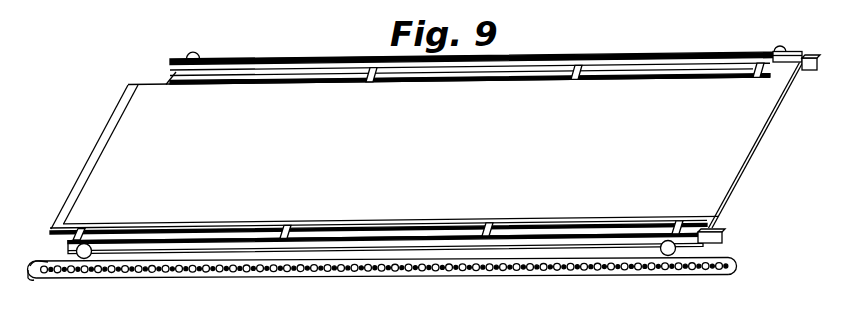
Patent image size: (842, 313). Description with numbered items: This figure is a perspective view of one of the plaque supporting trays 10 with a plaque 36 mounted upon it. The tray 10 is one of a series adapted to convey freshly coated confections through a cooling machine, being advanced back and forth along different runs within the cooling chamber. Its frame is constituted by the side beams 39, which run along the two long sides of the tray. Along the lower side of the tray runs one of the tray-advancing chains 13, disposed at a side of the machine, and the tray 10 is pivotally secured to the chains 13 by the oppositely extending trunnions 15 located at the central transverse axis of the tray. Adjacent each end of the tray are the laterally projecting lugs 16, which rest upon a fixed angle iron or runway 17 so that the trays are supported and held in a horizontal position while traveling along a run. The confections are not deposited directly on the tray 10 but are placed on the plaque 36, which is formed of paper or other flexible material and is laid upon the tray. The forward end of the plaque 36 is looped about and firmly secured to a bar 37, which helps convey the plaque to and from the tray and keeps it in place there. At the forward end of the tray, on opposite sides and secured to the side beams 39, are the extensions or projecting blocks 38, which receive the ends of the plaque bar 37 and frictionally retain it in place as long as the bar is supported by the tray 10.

The tray 10 is at (93, 143).
The chain 13 is at (113, 276).
The trunnion 15 is at (473, 55).
The lug 16 is at (190, 52).
The runway 17 is at (35, 272).
The plaque 36 is at (100, 165).
The plaque bar 37 is at (757, 150).
The projecting block 38 is at (802, 71).
The side beam 39 is at (740, 57).